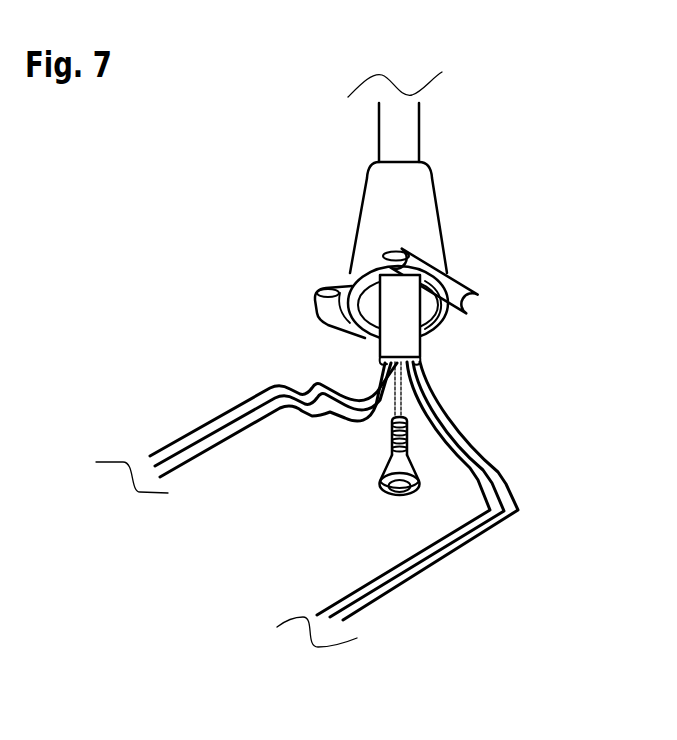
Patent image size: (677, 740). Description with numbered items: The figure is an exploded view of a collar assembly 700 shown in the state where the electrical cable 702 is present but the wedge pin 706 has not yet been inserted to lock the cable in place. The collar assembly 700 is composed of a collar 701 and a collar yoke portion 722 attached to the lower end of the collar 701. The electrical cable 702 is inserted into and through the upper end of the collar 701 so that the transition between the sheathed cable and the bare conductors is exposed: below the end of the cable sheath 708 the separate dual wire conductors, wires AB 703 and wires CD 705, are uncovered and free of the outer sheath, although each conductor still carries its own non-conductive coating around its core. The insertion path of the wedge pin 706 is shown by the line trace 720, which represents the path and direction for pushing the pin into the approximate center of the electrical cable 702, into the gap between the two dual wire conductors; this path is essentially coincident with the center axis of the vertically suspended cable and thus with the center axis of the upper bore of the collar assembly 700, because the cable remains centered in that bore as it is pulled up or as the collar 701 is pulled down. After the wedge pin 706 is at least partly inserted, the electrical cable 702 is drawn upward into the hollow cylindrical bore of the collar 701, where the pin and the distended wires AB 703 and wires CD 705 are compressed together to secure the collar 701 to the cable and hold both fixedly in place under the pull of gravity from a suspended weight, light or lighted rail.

The collar assembly 700 is at (300, 158).
The collar 701 is at (442, 225).
The electrical cable 702 is at (399, 125).
The wires AB 703 is at (207, 443).
The wires CD 705 is at (357, 588).
The wedge pin 706 is at (420, 492).
The cable sheath 708 is at (375, 360).
The wedge pin insertion path 720 is at (391, 413).
The collar yoke portion 722 is at (470, 303).